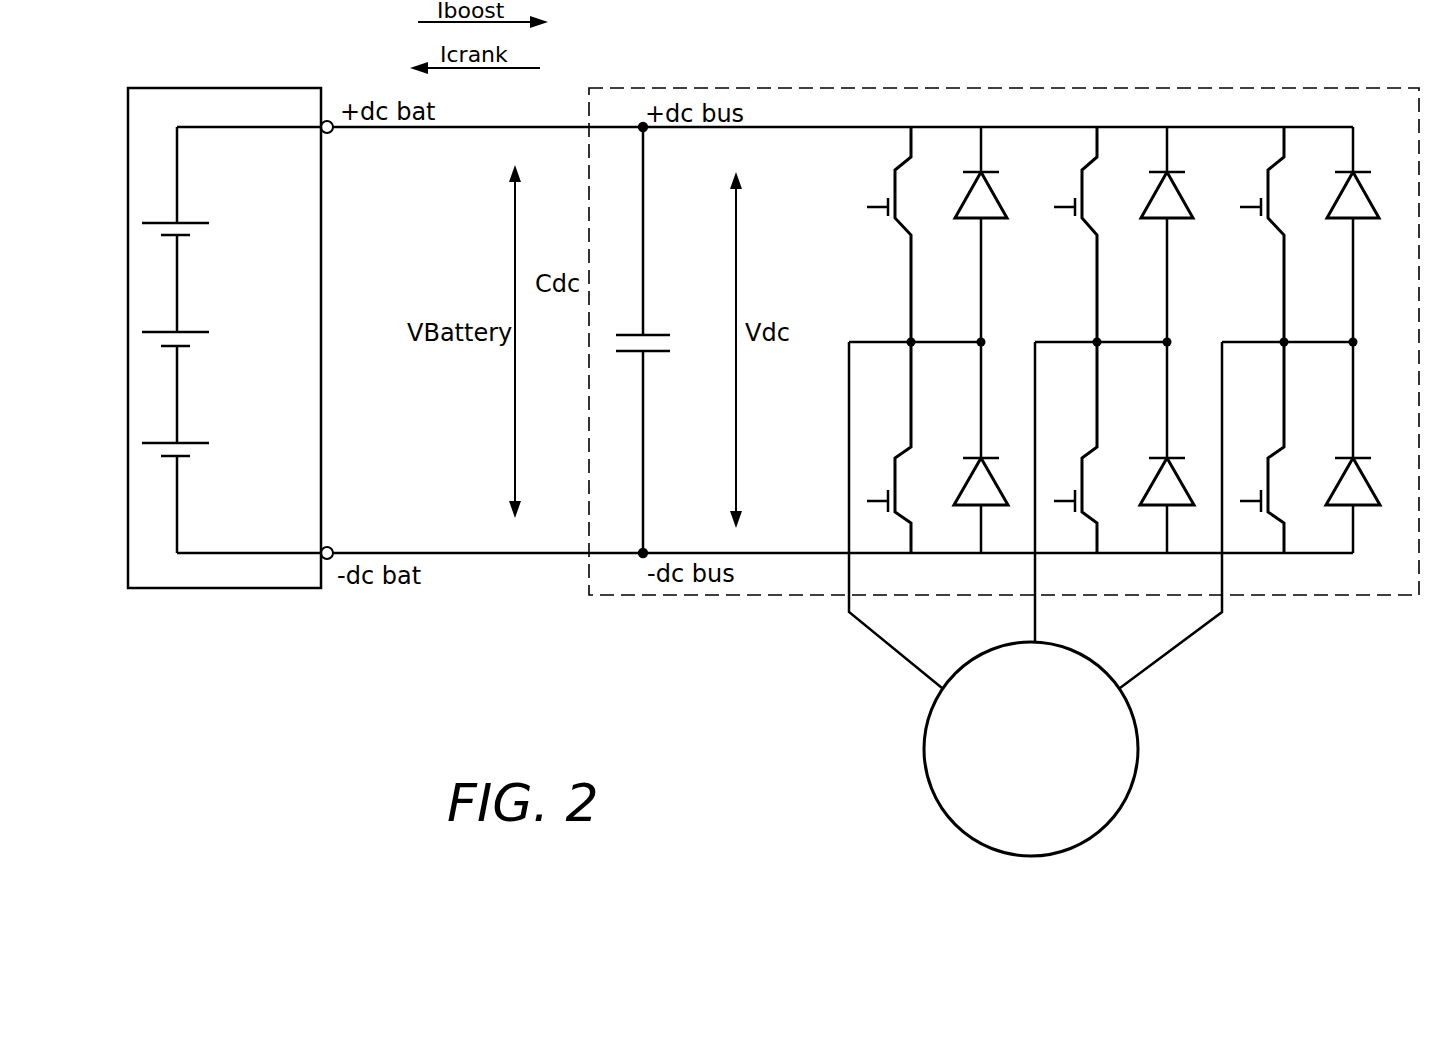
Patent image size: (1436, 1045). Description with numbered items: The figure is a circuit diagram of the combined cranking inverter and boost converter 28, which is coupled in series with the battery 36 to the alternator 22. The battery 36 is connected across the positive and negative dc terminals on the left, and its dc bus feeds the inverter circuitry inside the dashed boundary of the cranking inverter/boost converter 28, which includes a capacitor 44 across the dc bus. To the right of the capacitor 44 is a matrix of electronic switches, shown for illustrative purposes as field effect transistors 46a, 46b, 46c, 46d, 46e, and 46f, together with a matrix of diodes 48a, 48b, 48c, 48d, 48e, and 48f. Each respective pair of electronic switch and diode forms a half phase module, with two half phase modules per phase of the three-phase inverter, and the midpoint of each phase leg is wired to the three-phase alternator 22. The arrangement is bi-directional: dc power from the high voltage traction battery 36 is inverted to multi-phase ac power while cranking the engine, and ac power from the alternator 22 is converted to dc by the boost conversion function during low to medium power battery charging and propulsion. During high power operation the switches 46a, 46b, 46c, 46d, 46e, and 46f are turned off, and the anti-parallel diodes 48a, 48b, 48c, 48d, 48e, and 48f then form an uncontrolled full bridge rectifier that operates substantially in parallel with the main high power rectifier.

The alternator 22 is at (1138, 746).
The cranking inverter/boost converter 28 is at (950, 88).
The battery 36 is at (210, 588).
The capacitor 44 is at (656, 334).
The field effect transistor 46a is at (1240, 207).
The field effect transistor 46b is at (1248, 503).
The field effect transistor 46c is at (1054, 207).
The field effect transistor 46d is at (1058, 501).
The field effect transistor 46e is at (867, 207).
The field effect transistor 46f is at (870, 501).
The diode 48a is at (1379, 215).
The diode 48b is at (1366, 476).
The diode 48c is at (1193, 215).
The diode 48d is at (1178, 476).
The diode 48e is at (1007, 215).
The diode 48f is at (994, 474).